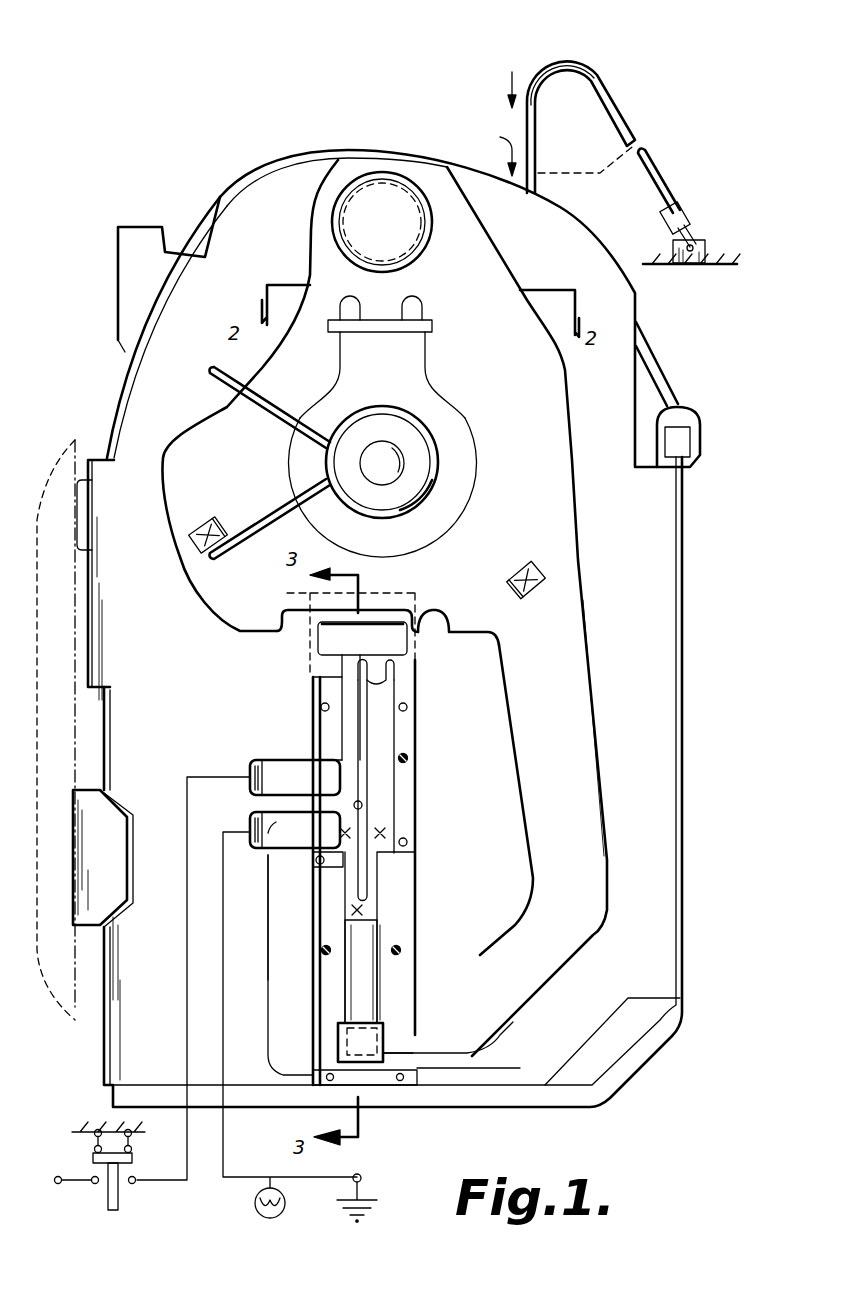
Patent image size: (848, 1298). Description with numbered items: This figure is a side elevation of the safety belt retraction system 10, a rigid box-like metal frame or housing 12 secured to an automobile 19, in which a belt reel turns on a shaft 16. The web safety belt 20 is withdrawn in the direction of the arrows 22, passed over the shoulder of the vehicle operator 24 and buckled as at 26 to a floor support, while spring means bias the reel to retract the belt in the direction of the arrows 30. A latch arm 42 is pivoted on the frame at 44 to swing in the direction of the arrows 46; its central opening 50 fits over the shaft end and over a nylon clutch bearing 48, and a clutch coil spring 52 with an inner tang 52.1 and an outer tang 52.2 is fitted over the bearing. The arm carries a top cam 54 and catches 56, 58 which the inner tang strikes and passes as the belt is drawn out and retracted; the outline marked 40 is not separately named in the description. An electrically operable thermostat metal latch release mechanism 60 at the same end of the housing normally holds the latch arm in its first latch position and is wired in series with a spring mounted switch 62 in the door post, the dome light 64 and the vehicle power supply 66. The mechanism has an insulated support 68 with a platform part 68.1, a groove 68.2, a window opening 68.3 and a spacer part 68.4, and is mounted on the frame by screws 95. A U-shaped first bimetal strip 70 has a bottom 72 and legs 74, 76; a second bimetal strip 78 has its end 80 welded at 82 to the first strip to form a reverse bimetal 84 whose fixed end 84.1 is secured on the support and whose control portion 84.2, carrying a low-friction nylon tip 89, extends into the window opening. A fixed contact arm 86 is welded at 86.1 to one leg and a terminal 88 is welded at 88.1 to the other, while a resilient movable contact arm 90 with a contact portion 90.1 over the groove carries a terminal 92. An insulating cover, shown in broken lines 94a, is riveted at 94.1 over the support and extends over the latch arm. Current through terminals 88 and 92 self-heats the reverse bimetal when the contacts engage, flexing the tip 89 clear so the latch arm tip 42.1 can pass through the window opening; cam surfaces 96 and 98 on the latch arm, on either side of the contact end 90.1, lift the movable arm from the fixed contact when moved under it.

The safety belt retraction system 10 is at (414, 94).
The frame or housing 12 is at (478, 146).
The shaft 16 is at (386, 448).
The automobile 19 is at (700, 270).
The web safety belt 20 is at (536, 130).
The arrows 22 is at (505, 100).
The vehicle operator or passenger 24 is at (588, 174).
The buckle 26 is at (682, 214).
The arrows 30 is at (498, 145).
The inner housing body 40 is at (572, 410).
The latch arm 42 is at (562, 462).
The tip of the latch arm 42.1 is at (430, 1045).
The pivot 44 is at (393, 183).
The arrows 46 is at (430, 1073).
The clutch bearing 48 is at (412, 456).
The central opening 50 is at (466, 486).
The clutch coil spring 52 is at (398, 385).
The inner tang 52.1 is at (262, 498).
The outer tang 52.2 is at (283, 386).
The top cam 54 is at (368, 322).
The catch 56 is at (205, 524).
The catch 58 is at (530, 576).
The thermostat metal latch release mechanism 60 is at (430, 763).
The spring mounted switch 62 is at (134, 1158).
The interior or dome light 64 is at (255, 1203).
The vehicle power supply 66 is at (60, 1176).
The insulated base or support 68 is at (398, 725).
The platform part 68.1 is at (410, 740).
The groove 68.2 is at (337, 684).
The window opening 68.3 is at (320, 1054).
The spacer part 68.4 is at (370, 1073).
The first strip 70 is at (387, 860).
The bottom 72 is at (363, 908).
The leg 74 is at (382, 880).
The leg 76 is at (347, 887).
The second strip 78 is at (382, 985).
The end of second strip 80 is at (360, 927).
The weld 82 is at (345, 912).
The reverse bimetal 84 is at (268, 972).
The first end of the reverse bimetal 84.1 is at (383, 817).
The control portion 84.2 is at (387, 1033).
The fixed contact arm 86 is at (380, 700).
The weld 86.1 is at (390, 828).
The terminal 88 is at (253, 813).
The weld 88.1 is at (330, 813).
The tip 89 is at (347, 1030).
The resilient movable contact arm 90 is at (343, 733).
The movable contact portion 90.1 is at (350, 645).
The terminal 92 is at (270, 762).
The broken lines indicating the cover 94a is at (283, 592).
The rivets 94.1 is at (320, 707).
The screws 95 is at (322, 950).
The cam surface 96 is at (437, 620).
The cam surface 98 is at (288, 620).